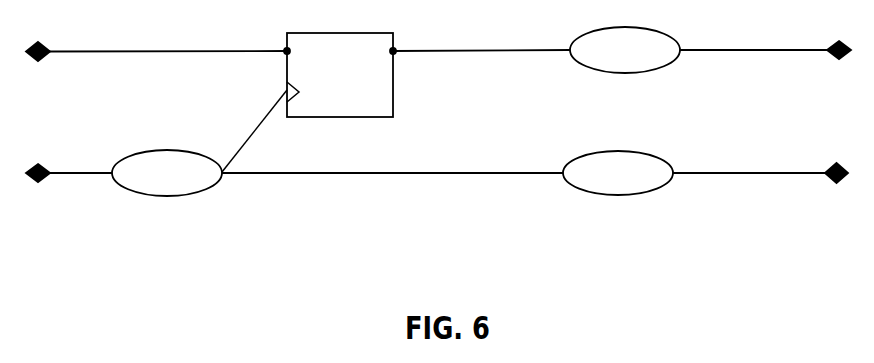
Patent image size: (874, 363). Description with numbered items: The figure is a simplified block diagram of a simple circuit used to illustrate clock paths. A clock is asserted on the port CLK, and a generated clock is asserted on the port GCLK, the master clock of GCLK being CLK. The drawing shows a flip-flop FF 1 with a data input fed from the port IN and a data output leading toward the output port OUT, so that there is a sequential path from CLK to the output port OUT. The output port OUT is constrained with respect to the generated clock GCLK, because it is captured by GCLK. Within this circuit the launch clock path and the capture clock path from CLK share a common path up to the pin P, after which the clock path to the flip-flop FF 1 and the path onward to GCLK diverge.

The flip-flop FF1 1 is at (340, 75).
The data input terminal IN is at (150, 60).
The output port OUT is at (622, 43).
The clock port CLK is at (117, 175).
The generated clock port GCLK is at (705, 180).
The pin P is at (392, 146).